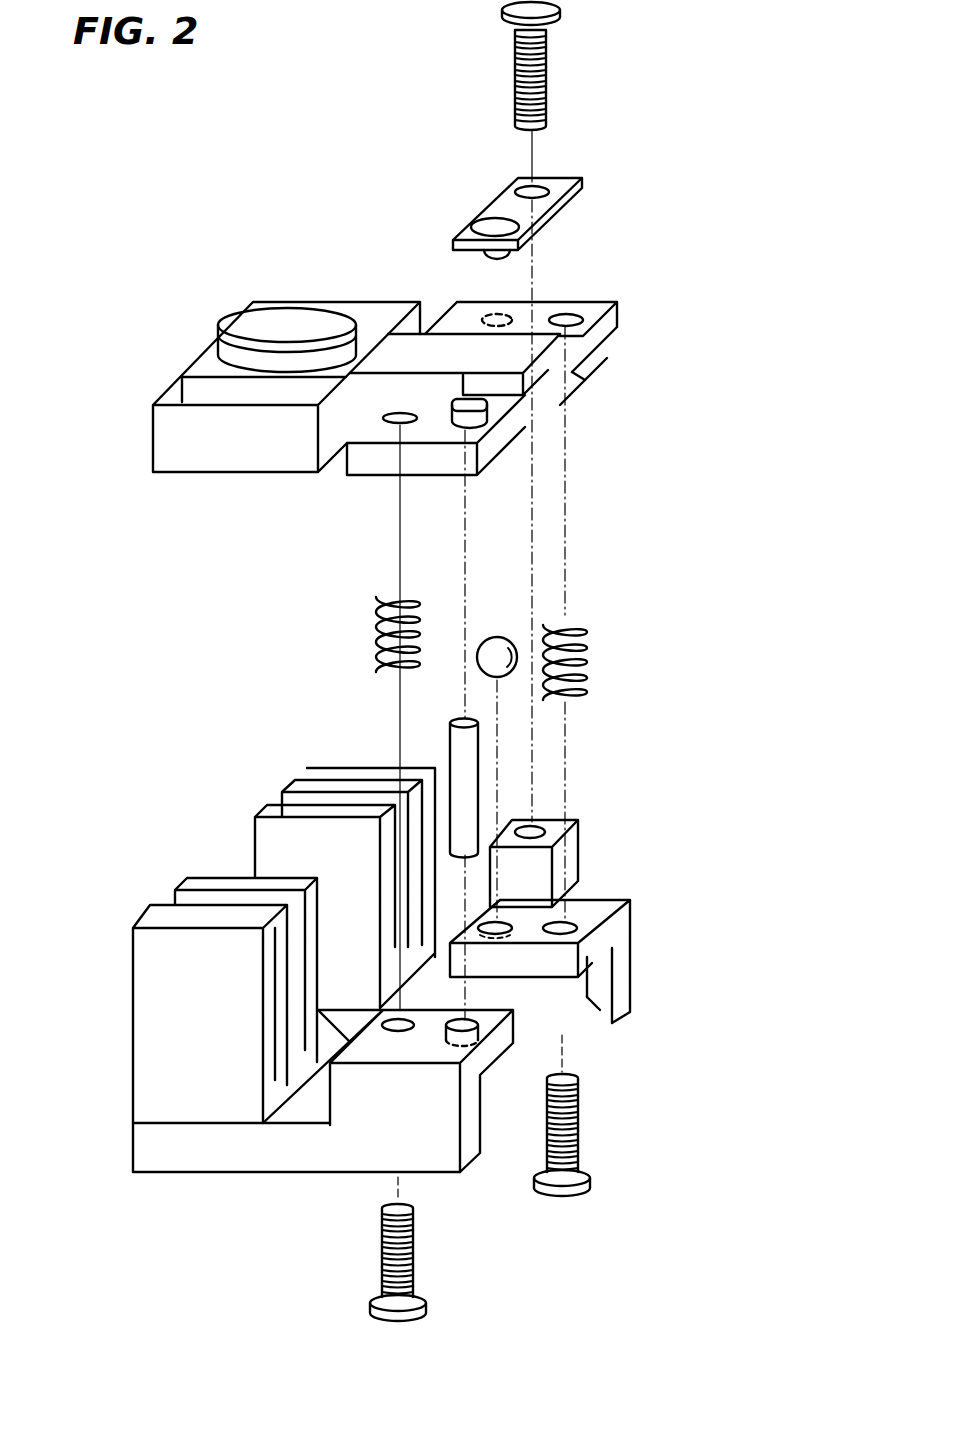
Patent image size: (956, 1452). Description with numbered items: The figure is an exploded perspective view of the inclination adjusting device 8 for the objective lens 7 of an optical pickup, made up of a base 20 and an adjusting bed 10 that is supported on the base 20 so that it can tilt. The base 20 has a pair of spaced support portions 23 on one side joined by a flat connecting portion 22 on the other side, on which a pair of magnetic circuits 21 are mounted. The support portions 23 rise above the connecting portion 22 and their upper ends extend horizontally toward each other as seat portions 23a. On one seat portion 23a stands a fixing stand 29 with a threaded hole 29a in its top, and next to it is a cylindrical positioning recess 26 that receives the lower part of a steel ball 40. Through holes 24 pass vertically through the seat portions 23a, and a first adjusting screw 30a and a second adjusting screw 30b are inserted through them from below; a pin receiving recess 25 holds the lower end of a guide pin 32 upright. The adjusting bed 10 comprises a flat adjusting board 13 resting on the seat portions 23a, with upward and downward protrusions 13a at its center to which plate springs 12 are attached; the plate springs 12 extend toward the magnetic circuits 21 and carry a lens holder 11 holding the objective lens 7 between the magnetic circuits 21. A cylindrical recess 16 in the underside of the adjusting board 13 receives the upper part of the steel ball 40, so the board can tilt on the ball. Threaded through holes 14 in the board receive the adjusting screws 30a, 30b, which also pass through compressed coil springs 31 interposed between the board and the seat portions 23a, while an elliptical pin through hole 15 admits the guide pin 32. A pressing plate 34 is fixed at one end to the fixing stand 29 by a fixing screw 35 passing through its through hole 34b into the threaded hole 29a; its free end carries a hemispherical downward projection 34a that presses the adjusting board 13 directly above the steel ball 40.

The objective lens 7 is at (248, 320).
The inclination adjusting device 8 is at (270, 1248).
The adjusting bed 10 is at (432, 490).
The lens holder 11 is at (157, 440).
The plate spring 12 is at (612, 428).
The adjusting board 13 is at (622, 320).
The upward and downward protrusions 13a is at (555, 360).
The threaded through hole 14 is at (585, 313).
The pin through hole 15 is at (487, 428).
The cylindrical recess 16 is at (481, 303).
The base 20 is at (222, 1185).
The magnetic circuit 21 is at (158, 900).
The connecting portion 22 is at (142, 1138).
The support portion 23 is at (630, 940).
The seat portion 23a is at (587, 957).
The through hole 24 is at (573, 928).
The pin receiving recess 25 is at (442, 1040).
The positioning recess 26 is at (503, 927).
The fixing stand 29 is at (580, 823).
The threaded hole 29a is at (535, 825).
The first adjusting screw 30a is at (580, 1150).
The second adjusting screw 30b is at (413, 1258).
The coil spring 31 is at (543, 627).
The guide pin 32 is at (453, 757).
The pressing plate 34 is at (503, 207).
The hemispherical downward projection 34a is at (485, 256).
The through hole 34b is at (553, 185).
The fixing screw 35 is at (515, 78).
The steel ball 40 is at (487, 661).